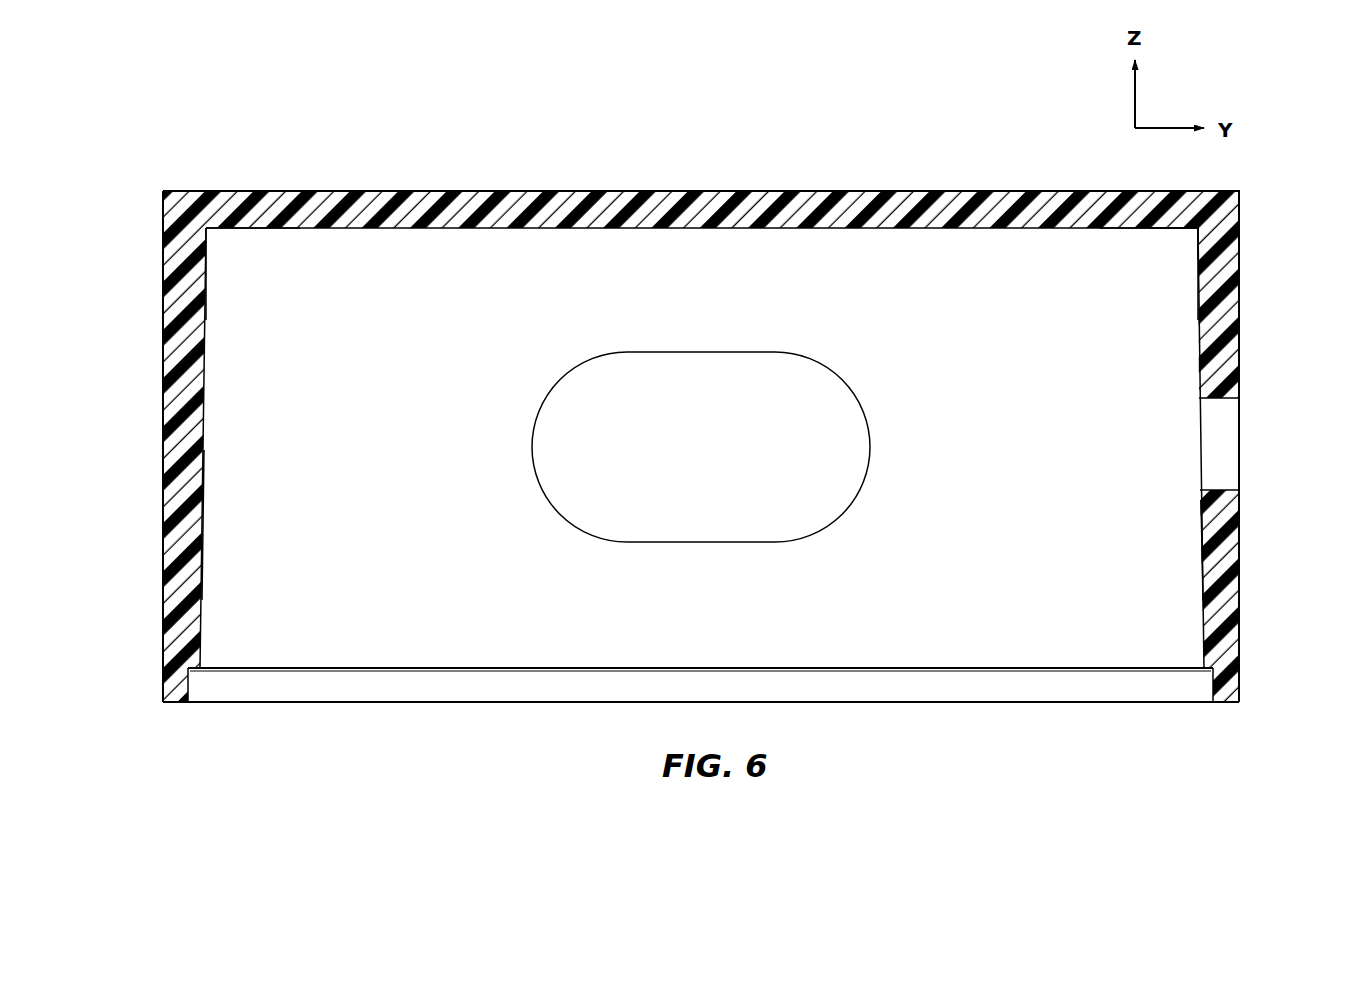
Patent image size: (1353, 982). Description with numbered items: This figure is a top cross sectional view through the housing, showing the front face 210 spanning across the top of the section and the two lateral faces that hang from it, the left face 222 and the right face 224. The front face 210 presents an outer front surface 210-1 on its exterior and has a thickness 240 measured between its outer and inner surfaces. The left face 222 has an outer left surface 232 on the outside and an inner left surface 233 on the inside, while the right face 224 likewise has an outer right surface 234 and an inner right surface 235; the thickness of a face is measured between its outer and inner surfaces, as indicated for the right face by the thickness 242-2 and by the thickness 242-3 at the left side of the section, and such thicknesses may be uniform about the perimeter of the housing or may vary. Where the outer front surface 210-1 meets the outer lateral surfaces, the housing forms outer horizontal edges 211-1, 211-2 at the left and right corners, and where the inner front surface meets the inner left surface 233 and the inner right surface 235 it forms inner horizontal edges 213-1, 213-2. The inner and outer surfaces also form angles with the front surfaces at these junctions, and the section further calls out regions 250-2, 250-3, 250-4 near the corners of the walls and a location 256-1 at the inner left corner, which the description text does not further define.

The front face 210 is at (696, 183).
The outer front surface 210-1 is at (815, 190).
The outer horizontal edge 211-1 is at (163, 191).
The outer horizontal edge 211-2 is at (1239, 191).
The inner horizontal edge 213-1 is at (163, 247).
The inner horizontal edge 213-2 is at (1198, 228).
The left face 222 is at (156, 462).
The right face 224 is at (1249, 462).
The outer left surface 232 is at (163, 340).
The inner left surface 233 is at (203, 527).
The outer right surface 234 is at (1239, 340).
The inner right surface 235 is at (1200, 527).
The thickness 240 is at (585, 250).
The thickness 242-2 is at (1175, 607).
The thickness 242-3 is at (227, 607).
The second curved transition 250-2 is at (1190, 309).
The third curved transition 250-3 is at (359, 203).
The fourth curved transition 250-4 is at (1045, 203).
The inner corner 256-1 is at (289, 241).